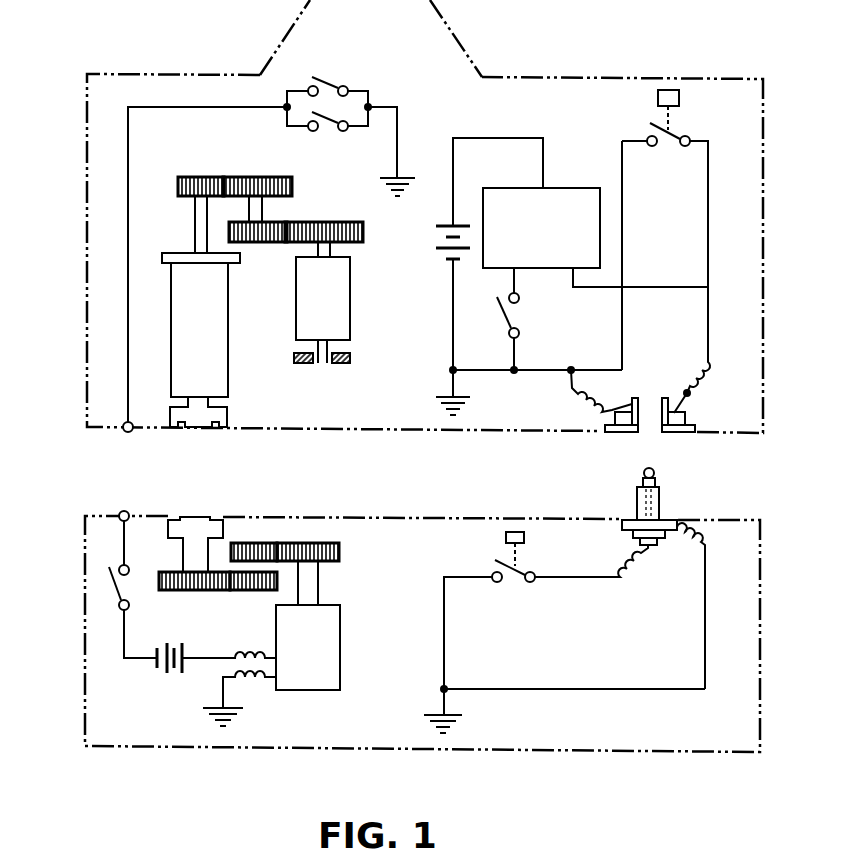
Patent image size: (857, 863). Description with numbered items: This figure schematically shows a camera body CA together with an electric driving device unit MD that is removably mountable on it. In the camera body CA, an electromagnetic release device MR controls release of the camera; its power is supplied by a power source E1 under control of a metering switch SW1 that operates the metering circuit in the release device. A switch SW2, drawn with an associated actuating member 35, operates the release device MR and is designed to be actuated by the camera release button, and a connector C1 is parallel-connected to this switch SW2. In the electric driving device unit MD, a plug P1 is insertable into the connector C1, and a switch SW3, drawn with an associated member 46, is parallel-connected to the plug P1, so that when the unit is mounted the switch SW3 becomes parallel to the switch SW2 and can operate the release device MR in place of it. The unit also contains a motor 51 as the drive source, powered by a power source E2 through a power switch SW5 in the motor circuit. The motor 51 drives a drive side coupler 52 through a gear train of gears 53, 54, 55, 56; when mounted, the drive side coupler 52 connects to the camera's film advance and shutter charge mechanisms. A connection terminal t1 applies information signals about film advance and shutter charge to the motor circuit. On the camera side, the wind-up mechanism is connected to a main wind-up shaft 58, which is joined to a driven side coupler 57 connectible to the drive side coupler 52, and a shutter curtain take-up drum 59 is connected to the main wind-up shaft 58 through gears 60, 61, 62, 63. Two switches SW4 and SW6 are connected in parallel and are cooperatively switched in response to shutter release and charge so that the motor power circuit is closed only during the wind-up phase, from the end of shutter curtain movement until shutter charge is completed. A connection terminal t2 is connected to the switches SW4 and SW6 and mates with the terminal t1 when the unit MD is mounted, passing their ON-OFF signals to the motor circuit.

The camera body CA is at (703, 77).
The electric driving device unit MD is at (668, 753).
The shutter release actuating member 35 is at (680, 100).
The actuating member 46 is at (524, 538).
The motor 51 is at (340, 661).
The drive side coupler 52 is at (202, 500).
The gear 53 is at (340, 552).
The gear 54 is at (264, 542).
The gear 55 is at (262, 591).
The gear 56 is at (192, 591).
The driven side coupler 57 is at (202, 428).
The main wind-up shaft 58 is at (228, 372).
The shutter curtain take-up drum 59 is at (296, 311).
The gear 60 is at (198, 176).
The gear 61 is at (256, 176).
The gear 62 is at (258, 243).
The gear 63 is at (364, 234).
The metering switch SW1 is at (520, 322).
The switch for operating the release device SW2 is at (668, 150).
The switch SW3 is at (515, 585).
The switch SW4 is at (328, 80).
The power switch SW5 is at (112, 590).
The switch SW6 is at (330, 131).
The electromagnetic release device MR is at (565, 188).
The power source E1 is at (440, 255).
The power source E2 is at (168, 675).
The connector C1 is at (625, 435).
The plug P1 is at (660, 505).
The connection terminal t1 is at (133, 498).
The connection terminal t2 is at (126, 433).